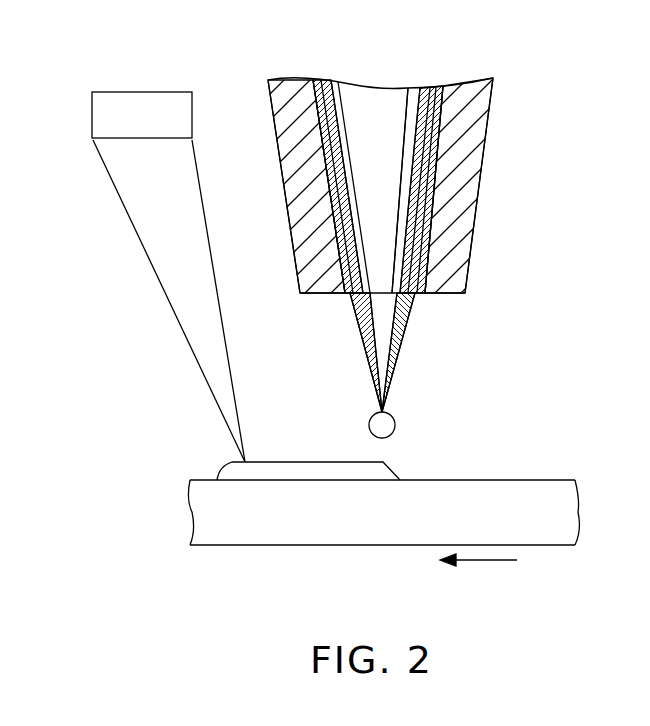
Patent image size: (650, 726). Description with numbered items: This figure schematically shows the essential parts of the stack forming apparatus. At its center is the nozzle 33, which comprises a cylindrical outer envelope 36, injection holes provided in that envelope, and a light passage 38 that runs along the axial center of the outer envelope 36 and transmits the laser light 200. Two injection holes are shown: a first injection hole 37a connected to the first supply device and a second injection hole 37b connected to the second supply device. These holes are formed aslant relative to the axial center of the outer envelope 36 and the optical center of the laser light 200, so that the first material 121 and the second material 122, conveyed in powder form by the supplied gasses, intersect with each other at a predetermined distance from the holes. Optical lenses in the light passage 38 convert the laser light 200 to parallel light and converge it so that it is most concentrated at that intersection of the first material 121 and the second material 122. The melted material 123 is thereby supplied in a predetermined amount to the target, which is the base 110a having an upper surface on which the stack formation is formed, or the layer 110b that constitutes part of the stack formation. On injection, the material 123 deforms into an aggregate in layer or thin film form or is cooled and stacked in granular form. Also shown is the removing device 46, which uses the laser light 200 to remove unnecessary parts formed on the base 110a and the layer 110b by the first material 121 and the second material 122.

The removing device 46 is at (150, 90).
The laser light 200 is at (121, 200).
The nozzle 33 is at (487, 120).
The outer envelope 36 is at (468, 232).
The first injection hole 37a is at (327, 152).
The second injection hole 37b is at (432, 182).
The light passage 38 is at (408, 88).
The first material 121 is at (356, 318).
The second material 122 is at (408, 319).
The melted material 123 is at (397, 425).
The base 110a is at (455, 478).
The layer 110b is at (282, 461).